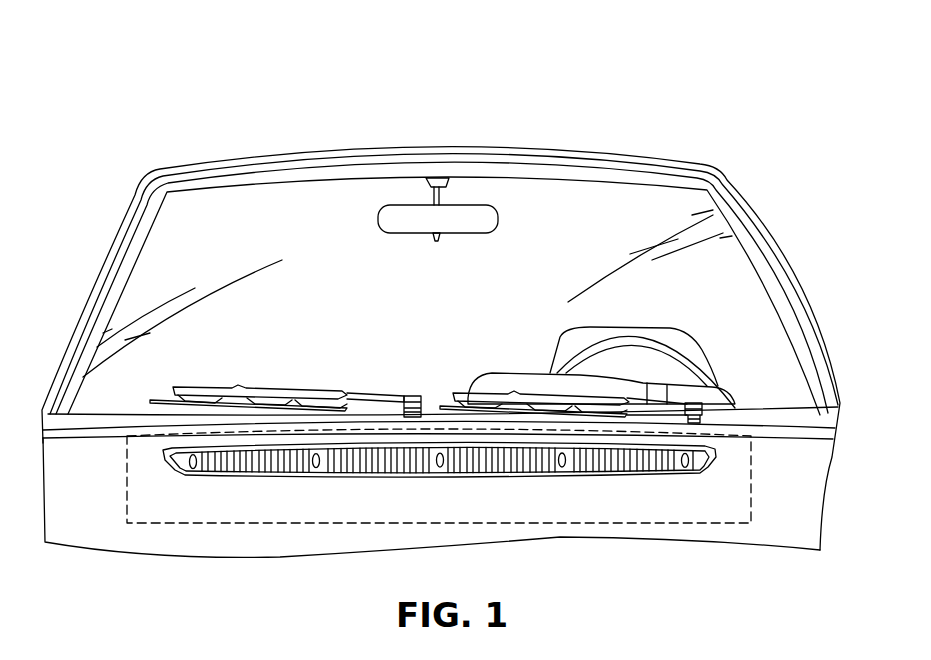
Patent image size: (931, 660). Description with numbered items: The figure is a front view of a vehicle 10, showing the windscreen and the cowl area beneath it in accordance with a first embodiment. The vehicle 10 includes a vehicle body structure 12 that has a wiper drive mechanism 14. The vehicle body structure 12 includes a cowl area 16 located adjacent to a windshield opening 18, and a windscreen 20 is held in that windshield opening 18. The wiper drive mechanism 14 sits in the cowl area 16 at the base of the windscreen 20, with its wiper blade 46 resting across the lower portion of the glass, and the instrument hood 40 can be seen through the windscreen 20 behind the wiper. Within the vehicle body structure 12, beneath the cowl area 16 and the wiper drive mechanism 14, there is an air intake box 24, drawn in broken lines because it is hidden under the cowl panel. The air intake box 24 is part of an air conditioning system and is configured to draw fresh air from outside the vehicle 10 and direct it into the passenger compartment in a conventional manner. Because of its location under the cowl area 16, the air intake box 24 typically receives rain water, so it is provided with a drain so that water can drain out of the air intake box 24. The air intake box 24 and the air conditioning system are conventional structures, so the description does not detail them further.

The vehicle 10 is at (194, 120).
The vehicle body structure 12 is at (543, 137).
The wiper drive mechanism 14 is at (412, 383).
The cowl area 16 is at (761, 410).
The windshield opening 18 is at (147, 237).
The windscreen 20 is at (310, 210).
The air intake box 24 is at (184, 524).
The dash cluster hood 40 is at (665, 400).
The wiper blade 46 is at (315, 397).